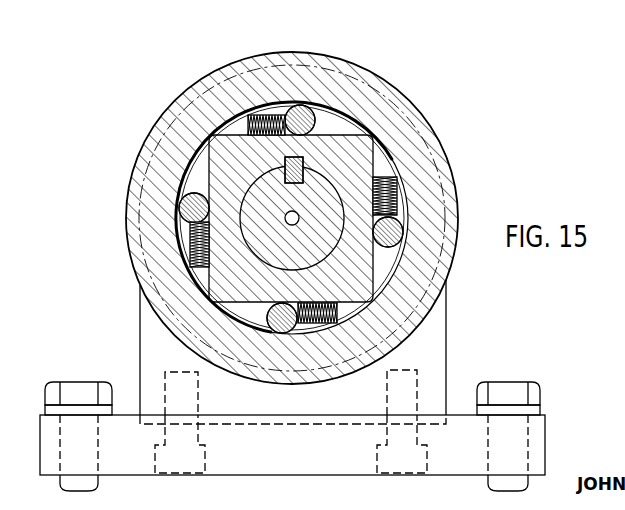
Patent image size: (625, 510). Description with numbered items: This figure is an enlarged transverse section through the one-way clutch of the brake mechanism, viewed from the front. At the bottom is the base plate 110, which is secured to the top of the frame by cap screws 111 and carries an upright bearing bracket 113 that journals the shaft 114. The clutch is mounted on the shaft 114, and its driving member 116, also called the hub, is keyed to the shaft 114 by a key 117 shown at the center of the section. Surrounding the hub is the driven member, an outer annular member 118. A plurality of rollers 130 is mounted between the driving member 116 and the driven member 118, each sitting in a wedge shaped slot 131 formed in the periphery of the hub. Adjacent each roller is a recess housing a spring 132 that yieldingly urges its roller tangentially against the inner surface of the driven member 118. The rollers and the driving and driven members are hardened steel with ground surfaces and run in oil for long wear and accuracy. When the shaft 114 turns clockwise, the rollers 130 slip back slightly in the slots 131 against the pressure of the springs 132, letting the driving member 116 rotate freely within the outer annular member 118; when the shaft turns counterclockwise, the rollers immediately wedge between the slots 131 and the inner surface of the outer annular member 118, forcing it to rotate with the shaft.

The base plate 110 is at (270, 466).
The cap screws 111 is at (85, 388).
The bearing bracket 113 is at (432, 331).
The shaft 114 is at (257, 195).
The driving member 116 is at (305, 157).
The key 117 is at (367, 148).
The outer annular member 118 is at (436, 146).
The rollers 130 is at (312, 112).
The wedge shaped slots 131 is at (323, 130).
The spring 132 is at (252, 115).